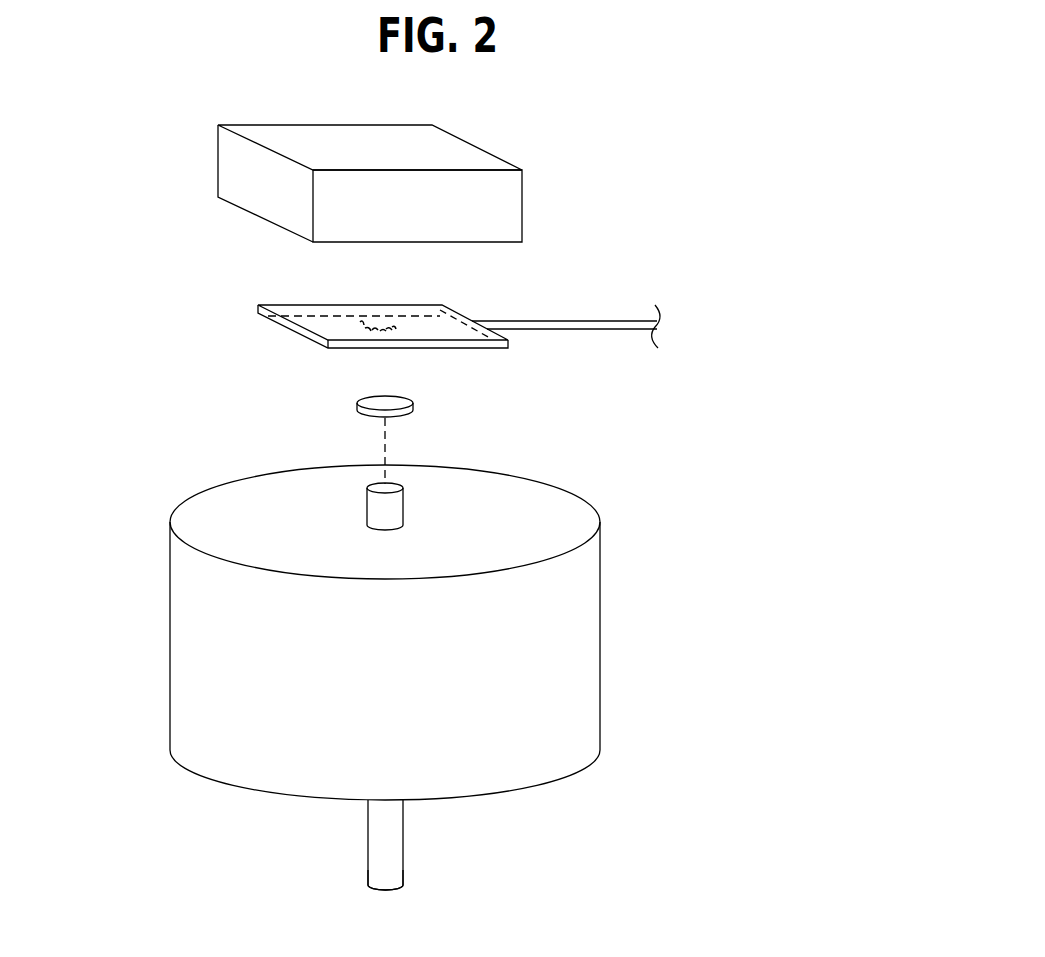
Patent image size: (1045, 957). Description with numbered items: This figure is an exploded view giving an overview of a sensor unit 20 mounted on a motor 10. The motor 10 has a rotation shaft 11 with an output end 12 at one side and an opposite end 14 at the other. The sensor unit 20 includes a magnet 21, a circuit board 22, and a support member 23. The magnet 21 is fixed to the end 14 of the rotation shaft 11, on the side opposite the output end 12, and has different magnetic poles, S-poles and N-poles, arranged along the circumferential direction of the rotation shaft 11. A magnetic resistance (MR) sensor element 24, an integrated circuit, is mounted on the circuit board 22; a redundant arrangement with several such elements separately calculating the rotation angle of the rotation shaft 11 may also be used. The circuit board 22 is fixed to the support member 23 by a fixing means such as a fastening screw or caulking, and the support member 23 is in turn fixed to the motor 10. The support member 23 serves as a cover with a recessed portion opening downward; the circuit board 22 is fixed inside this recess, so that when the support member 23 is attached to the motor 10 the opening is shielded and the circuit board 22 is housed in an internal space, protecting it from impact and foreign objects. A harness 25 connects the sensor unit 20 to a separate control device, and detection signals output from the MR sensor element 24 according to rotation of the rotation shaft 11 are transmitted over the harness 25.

The motor 10 is at (170, 632).
The rotation shaft 11 is at (367, 512).
The output end 12 is at (367, 885).
The end of the rotation shaft 14 is at (403, 490).
The sensor unit 20 is at (107, 148).
The magnet 21 is at (357, 408).
The circuit board 22 is at (258, 312).
The support member 23 is at (218, 160).
The MR sensor element 24 is at (369, 322).
The harness 25 is at (573, 320).